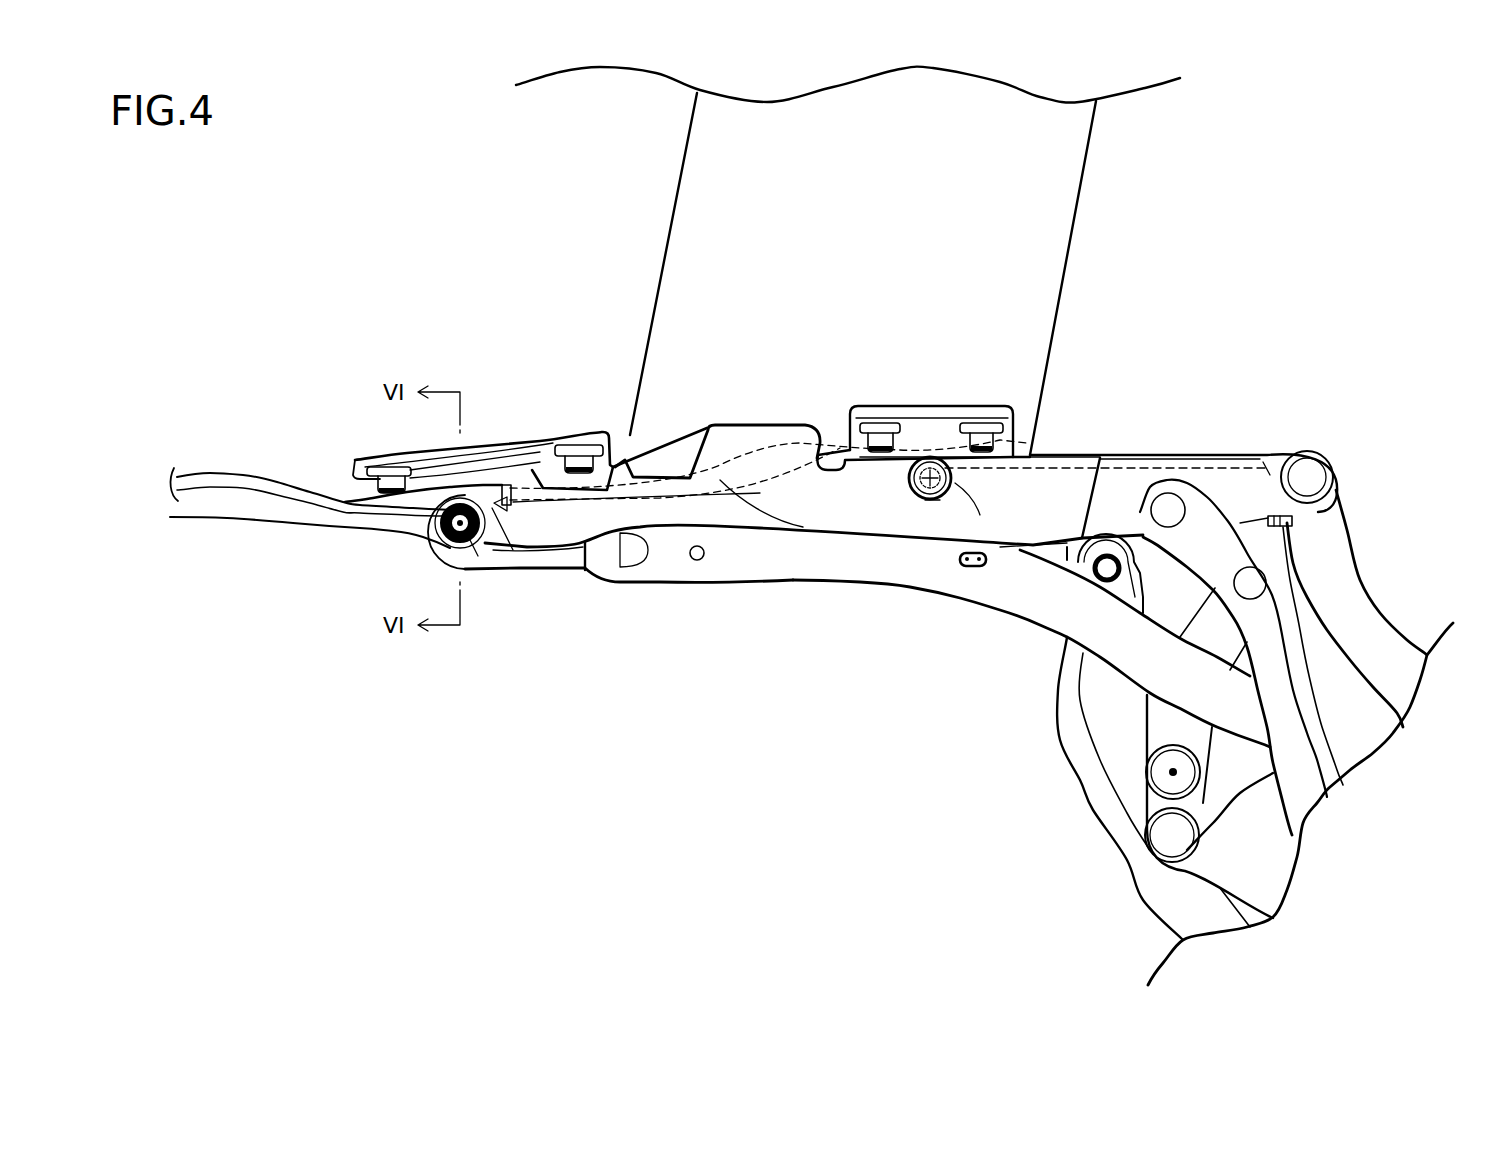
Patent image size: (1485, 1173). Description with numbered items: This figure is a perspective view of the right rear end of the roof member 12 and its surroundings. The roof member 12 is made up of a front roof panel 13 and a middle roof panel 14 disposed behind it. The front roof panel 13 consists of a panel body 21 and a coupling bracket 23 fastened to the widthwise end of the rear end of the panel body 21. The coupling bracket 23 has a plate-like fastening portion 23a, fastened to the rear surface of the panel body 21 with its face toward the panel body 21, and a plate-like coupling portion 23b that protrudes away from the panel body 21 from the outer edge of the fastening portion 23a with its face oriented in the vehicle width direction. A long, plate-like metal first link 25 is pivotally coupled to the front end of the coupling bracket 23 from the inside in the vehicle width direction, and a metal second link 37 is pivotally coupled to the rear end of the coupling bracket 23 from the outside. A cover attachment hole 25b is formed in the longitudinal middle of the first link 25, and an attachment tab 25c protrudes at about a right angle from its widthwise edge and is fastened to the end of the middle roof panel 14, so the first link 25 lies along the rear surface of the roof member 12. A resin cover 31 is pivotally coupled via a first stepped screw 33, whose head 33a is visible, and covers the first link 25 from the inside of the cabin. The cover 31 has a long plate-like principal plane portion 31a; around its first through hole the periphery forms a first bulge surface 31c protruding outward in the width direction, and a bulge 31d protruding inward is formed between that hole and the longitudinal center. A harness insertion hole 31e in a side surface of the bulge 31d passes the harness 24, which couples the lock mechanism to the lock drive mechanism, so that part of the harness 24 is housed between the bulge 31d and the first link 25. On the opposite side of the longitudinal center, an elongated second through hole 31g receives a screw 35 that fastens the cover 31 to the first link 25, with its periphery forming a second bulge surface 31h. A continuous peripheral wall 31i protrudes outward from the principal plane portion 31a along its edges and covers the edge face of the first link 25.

The roof member 12 is at (376, 148).
The front roof panel 13 is at (592, 166).
The middle roof panel 14 is at (717, 263).
The panel body 21 is at (268, 385).
The coupling bracket 23 is at (518, 433).
The fastening portion 23a is at (488, 447).
The coupling portion 23b is at (618, 552).
The harness 24 is at (713, 465).
The first link 25 is at (1127, 490).
The cover attachment hole 25b is at (943, 453).
The attachment tab 25c is at (897, 417).
The cover 31 is at (872, 503).
The principal plane portion 31a is at (958, 510).
The first bulge surface 31c is at (442, 527).
The bulge 31d is at (720, 480).
The harness insertion hole 31e is at (508, 506).
The second through hole 31g is at (932, 497).
The second bulge surface 31h is at (970, 490).
The peripheral wall 31i is at (470, 540).
The first stepped screw 33 is at (462, 540).
The head 33a is at (460, 523).
The screw 35 is at (918, 455).
The second link 37 is at (803, 560).